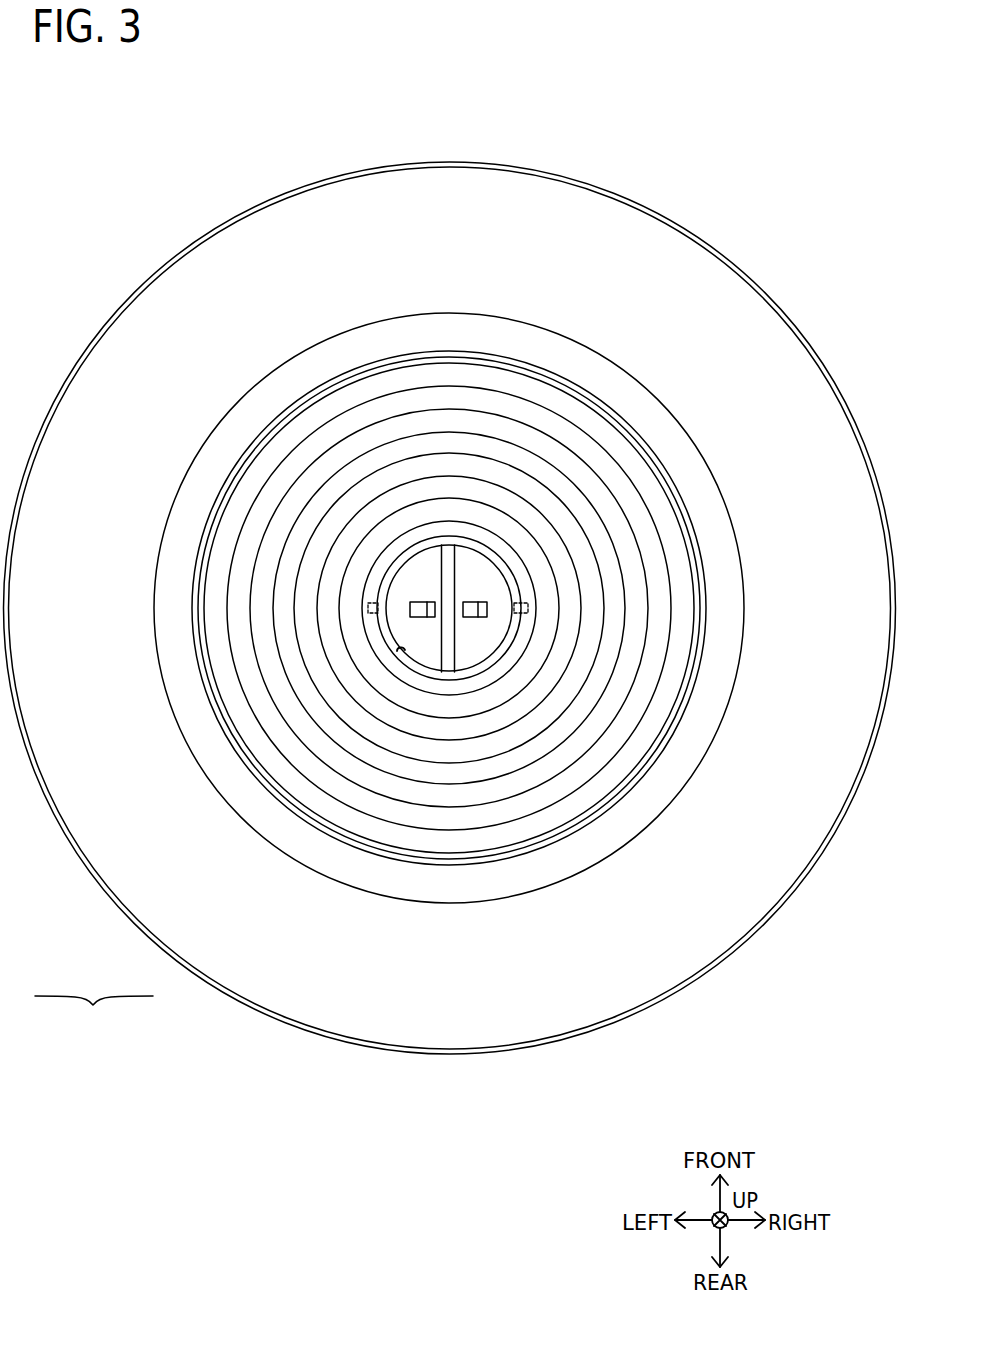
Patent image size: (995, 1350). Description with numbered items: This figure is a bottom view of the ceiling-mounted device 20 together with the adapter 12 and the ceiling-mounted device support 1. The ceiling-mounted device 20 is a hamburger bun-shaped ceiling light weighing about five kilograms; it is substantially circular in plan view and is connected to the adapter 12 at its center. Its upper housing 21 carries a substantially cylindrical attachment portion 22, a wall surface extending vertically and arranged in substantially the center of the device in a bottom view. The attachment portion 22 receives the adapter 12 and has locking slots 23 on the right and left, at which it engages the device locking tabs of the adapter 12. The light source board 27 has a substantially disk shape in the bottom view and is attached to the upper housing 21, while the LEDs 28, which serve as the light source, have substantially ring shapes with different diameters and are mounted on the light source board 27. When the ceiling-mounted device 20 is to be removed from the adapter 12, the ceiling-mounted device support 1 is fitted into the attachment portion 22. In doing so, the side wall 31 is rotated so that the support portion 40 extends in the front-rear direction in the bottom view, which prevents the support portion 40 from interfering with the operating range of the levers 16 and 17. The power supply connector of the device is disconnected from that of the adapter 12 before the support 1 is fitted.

The ceiling-mounted device support 1 is at (94, 1018).
The adapter 12 is at (482, 648).
The lever 16 is at (598, 790).
The lever 17 is at (653, 775).
The ceiling-mounted device 20 is at (793, 167).
The upper housing 21 is at (703, 273).
The attachment portion 22 is at (565, 457).
The locking slots 23 is at (522, 373).
The light source board 27 is at (528, 548).
The light emitting diodes (LEDs) 28 is at (537, 600).
The side wall 31 is at (223, 815).
The support portion 40 is at (289, 764).